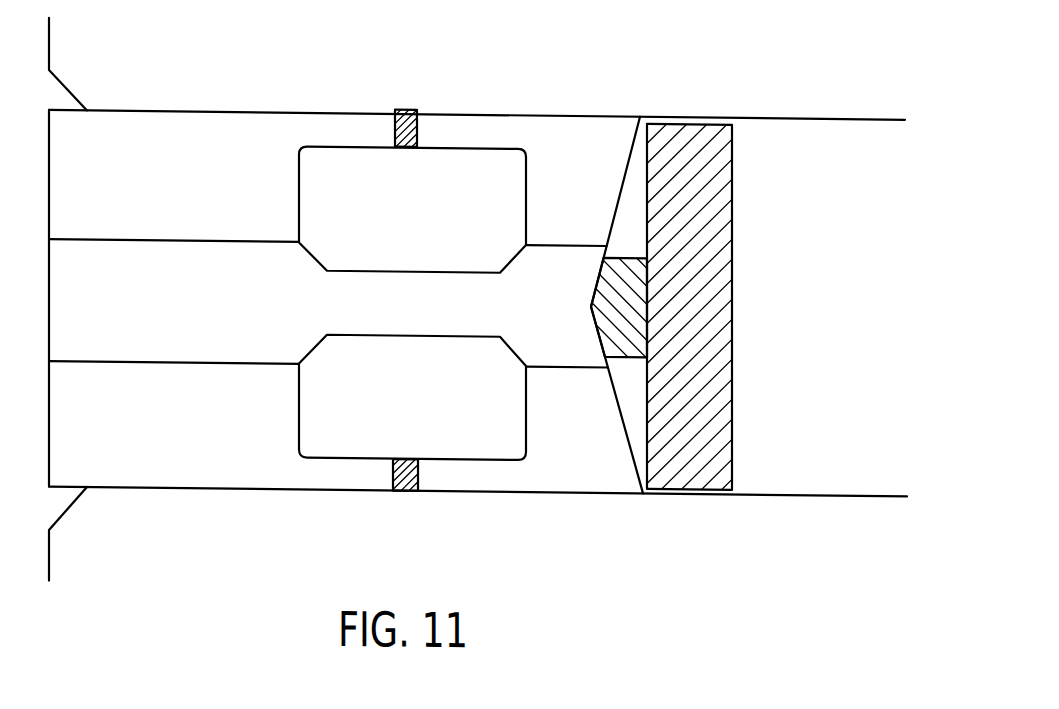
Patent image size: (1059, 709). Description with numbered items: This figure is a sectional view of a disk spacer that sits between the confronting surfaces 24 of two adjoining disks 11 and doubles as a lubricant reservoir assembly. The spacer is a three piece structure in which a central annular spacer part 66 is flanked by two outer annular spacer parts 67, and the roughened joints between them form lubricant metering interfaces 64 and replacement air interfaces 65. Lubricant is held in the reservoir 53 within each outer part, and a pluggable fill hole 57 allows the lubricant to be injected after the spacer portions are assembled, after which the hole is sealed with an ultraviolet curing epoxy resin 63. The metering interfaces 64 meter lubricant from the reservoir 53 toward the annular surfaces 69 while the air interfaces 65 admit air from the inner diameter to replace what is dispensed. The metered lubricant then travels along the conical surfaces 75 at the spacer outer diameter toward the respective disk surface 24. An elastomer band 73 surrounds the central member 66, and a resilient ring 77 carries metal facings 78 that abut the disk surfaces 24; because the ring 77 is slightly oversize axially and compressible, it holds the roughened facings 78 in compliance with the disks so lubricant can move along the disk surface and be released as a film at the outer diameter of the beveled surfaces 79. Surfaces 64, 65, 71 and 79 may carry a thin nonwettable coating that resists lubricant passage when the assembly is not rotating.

The disk 11 is at (119, 69).
The disk surface 24 is at (817, 112).
The reservoir 53 is at (429, 211).
The fill hole 57 is at (415, 110).
The ultraviolet curing epoxy resin 63 is at (402, 110).
The lubricant metering interface 64 is at (565, 244).
The replacement air interface 65 is at (211, 242).
The central annular spacer part 66 is at (161, 332).
The outer annular spacer part 67 is at (162, 206).
The annular surface 69 is at (570, 489).
The surface 71 is at (590, 330).
The elastomer band 73 is at (628, 250).
The conical surface 75 is at (628, 190).
The resilient ring 77 is at (732, 280).
The metal facing 78 is at (720, 110).
The beveled surface 79 is at (732, 115).